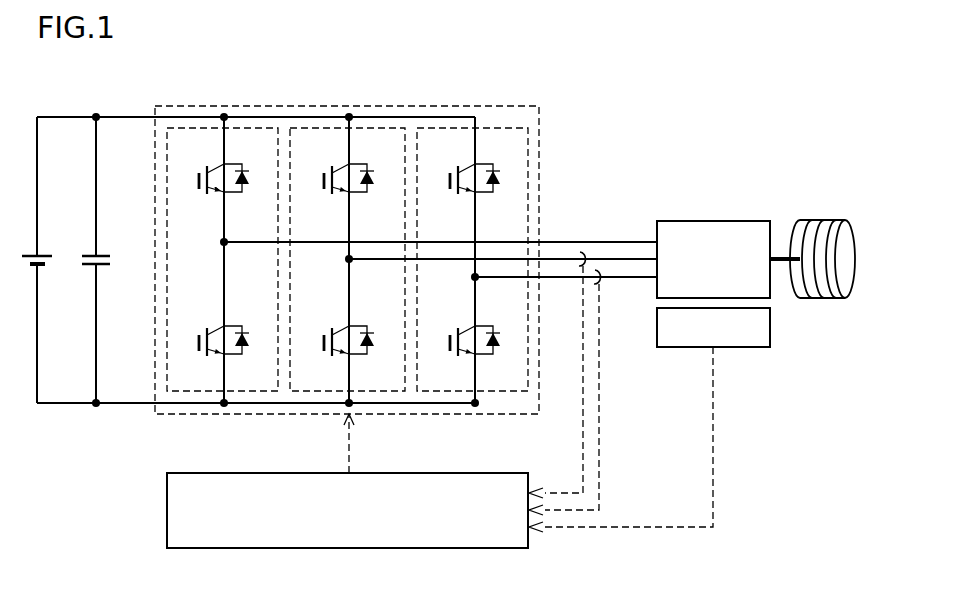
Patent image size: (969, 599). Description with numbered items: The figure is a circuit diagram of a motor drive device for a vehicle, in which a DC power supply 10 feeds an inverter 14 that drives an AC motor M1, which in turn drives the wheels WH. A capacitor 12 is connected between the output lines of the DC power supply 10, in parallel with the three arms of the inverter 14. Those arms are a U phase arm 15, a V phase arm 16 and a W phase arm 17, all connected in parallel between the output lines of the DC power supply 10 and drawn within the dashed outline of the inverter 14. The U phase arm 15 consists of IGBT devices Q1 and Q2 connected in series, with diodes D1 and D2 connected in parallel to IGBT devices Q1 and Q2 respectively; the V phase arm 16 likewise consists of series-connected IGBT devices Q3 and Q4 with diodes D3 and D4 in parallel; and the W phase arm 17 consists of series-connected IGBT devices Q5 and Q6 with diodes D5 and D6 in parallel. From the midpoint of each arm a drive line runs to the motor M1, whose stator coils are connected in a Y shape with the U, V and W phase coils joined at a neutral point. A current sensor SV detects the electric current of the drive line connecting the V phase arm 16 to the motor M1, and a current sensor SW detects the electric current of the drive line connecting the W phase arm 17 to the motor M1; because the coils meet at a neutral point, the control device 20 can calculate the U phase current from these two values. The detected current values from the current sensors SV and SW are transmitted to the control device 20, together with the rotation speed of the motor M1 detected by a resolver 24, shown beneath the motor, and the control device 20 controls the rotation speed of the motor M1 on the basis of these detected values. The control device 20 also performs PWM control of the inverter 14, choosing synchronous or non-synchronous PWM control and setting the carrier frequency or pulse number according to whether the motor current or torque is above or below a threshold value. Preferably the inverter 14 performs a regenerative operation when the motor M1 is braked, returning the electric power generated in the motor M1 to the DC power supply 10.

The DC power supply 10 is at (33, 255).
The capacitor 12 is at (93, 255).
The inverter 14 is at (186, 106).
The U phase arm 15 is at (257, 128).
The V phase arm 16 is at (382, 128).
The W phase arm 17 is at (507, 128).
The control device 20 is at (166, 511).
The resolver 24 is at (750, 348).
The IGBT device Q1 is at (199, 184).
The IGBT device Q2 is at (199, 346).
The IGBT device Q3 is at (324, 184).
The IGBT device Q4 is at (324, 346).
The IGBT device Q5 is at (450, 184).
The IGBT device Q6 is at (450, 346).
The diode D1 is at (246, 177).
The diode D2 is at (246, 339).
The diode D3 is at (371, 177).
The diode D4 is at (371, 339).
The diode D5 is at (497, 177).
The diode D6 is at (497, 339).
The current sensor SV is at (583, 250).
The current sensor SW is at (601, 287).
The motor M1 is at (713, 221).
The wheels WH is at (819, 221).